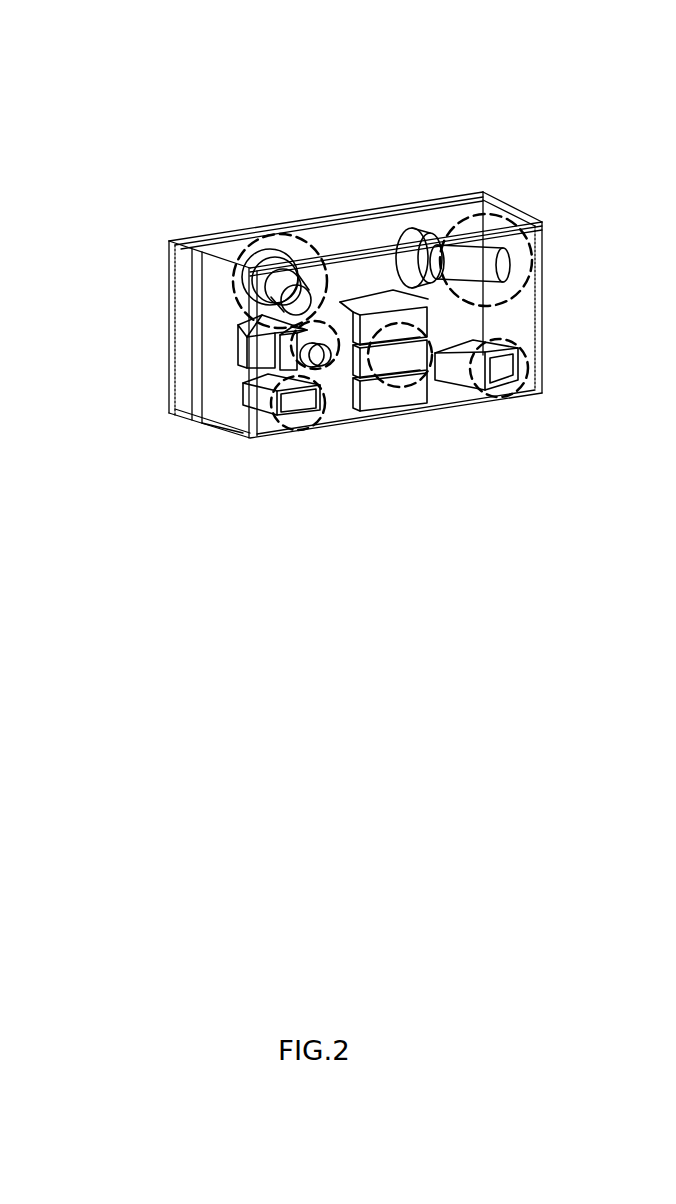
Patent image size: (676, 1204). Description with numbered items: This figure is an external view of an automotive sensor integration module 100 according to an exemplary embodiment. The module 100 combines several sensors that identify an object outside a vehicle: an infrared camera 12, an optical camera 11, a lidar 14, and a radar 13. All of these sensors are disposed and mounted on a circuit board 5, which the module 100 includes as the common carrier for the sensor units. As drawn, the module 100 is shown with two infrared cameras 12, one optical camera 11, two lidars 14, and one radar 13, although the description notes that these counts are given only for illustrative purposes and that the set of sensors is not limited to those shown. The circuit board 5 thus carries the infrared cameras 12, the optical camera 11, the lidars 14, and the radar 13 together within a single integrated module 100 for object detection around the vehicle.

The automotive sensor integration module 100 is at (541, 33).
The circuit board 5 is at (210, 256).
The optical camera 11 is at (283, 350).
The infrared camera 12 is at (455, 225).
The radar 13 is at (415, 392).
The lidar 14 is at (480, 390).